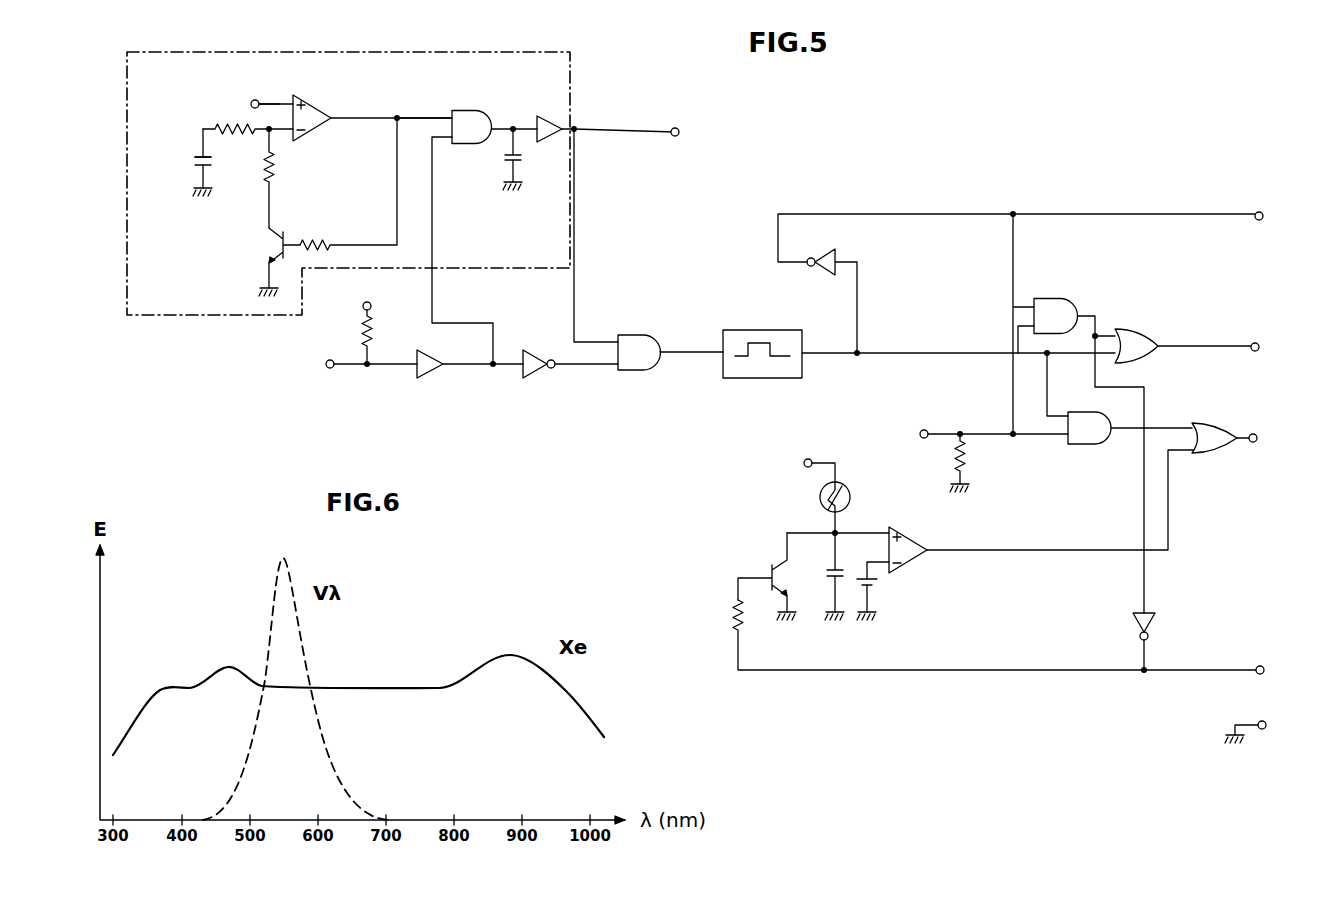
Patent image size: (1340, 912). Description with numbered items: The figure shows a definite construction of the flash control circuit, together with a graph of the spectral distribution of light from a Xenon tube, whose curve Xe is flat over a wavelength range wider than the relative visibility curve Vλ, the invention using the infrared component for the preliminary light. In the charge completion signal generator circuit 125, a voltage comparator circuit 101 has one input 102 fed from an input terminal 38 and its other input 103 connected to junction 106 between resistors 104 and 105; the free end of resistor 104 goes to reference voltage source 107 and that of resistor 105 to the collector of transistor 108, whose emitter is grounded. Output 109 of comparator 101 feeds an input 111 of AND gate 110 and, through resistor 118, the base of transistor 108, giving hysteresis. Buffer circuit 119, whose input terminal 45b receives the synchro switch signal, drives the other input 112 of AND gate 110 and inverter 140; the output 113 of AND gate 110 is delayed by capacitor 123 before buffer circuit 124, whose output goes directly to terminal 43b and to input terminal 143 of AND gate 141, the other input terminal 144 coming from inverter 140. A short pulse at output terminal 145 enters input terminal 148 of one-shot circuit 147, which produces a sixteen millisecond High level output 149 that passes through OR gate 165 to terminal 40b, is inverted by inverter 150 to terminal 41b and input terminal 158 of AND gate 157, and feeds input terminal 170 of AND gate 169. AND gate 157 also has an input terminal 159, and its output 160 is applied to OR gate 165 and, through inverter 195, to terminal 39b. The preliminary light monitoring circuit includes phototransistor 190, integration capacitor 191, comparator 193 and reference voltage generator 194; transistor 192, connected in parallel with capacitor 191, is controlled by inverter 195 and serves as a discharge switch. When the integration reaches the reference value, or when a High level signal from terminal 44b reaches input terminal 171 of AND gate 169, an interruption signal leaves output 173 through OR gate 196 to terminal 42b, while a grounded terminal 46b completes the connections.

The input terminal 38 is at (251, 100).
The voltage comparator circuit 101 is at (307, 98).
The input 102 is at (264, 100).
The input 103 is at (291, 133).
The resistor 104 is at (224, 124).
The resistor 105 is at (268, 168).
The junction 106 is at (267, 131).
The reference voltage source 107 is at (196, 160).
The transistor 108 is at (276, 247).
The output 109 is at (350, 117).
The AND gate 110 is at (462, 110).
The AND gate input 111 is at (418, 115).
The AND gate second input line 112 is at (440, 148).
The AND gate output line 113 is at (510, 126).
The resistor 118 is at (319, 238).
The buffer circuit 119 is at (432, 370).
The capacitor 123 is at (520, 163).
The buffer circuit 124 is at (548, 122).
The charge completion signal generator circuit 125 is at (513, 52).
The inverter 140 is at (538, 378).
The AND gate 141 is at (644, 335).
The input terminal 143 is at (592, 340).
The input terminal 144 is at (590, 365).
The output terminal 145 is at (678, 355).
The one-shot circuit 147 is at (766, 330).
The input terminal 148 is at (716, 355).
The one-shot output line 149 is at (829, 356).
The inverter 150 is at (836, 251).
The AND gate 157 is at (1058, 297).
The input terminal 158 is at (1020, 305).
The input terminal 159 is at (1012, 333).
The AND gate output line 160 is at (1083, 312).
The OR gate 165 is at (1143, 330).
The AND gate 169 is at (1088, 412).
The input terminal 170 is at (1055, 408).
The input terminal 171 is at (1032, 437).
The AND gate output line 173 is at (1122, 429).
The phototransistor 190 is at (848, 488).
The integration capacitor 191 is at (826, 573).
The transistor 192 is at (771, 564).
The comparator 193 is at (910, 540).
The reference voltage generator 194 is at (878, 583).
The inverter 195 is at (1157, 616).
The OR gate 196 is at (1208, 423).
The terminal 39b is at (1264, 666).
The terminal 40b is at (1262, 346).
The terminal 41b is at (1265, 213).
The terminal 42b is at (1260, 434).
The terminal 43b is at (680, 130).
The terminal 44b is at (923, 430).
The input terminal 45b is at (325, 368).
The terminal 46b is at (1267, 722).